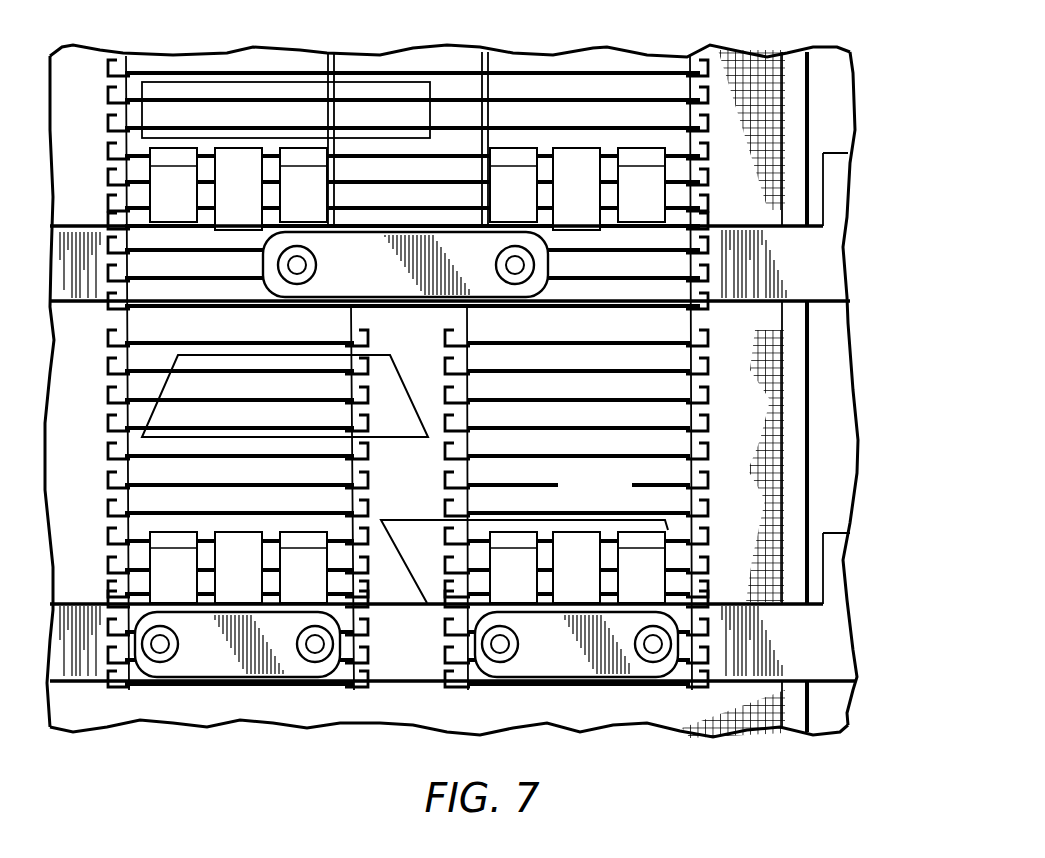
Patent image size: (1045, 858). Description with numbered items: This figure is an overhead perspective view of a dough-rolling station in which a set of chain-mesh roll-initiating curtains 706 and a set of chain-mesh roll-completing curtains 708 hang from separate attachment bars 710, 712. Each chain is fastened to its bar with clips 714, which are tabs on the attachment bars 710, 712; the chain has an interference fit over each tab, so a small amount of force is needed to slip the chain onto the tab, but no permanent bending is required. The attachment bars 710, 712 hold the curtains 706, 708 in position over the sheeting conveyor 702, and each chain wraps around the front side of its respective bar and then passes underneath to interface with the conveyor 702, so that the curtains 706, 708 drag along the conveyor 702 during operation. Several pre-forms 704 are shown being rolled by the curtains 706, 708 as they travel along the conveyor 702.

The sheeting conveyor 702 is at (783, 72).
The pre-forms 704 is at (846, 265).
The roll-initiating curtains 706 is at (710, 422).
The roll-completing curtains 708 is at (610, 64).
The attachment bar 710 is at (848, 682).
The attachment bar 712 is at (838, 310).
The clips 714 is at (577, 532).